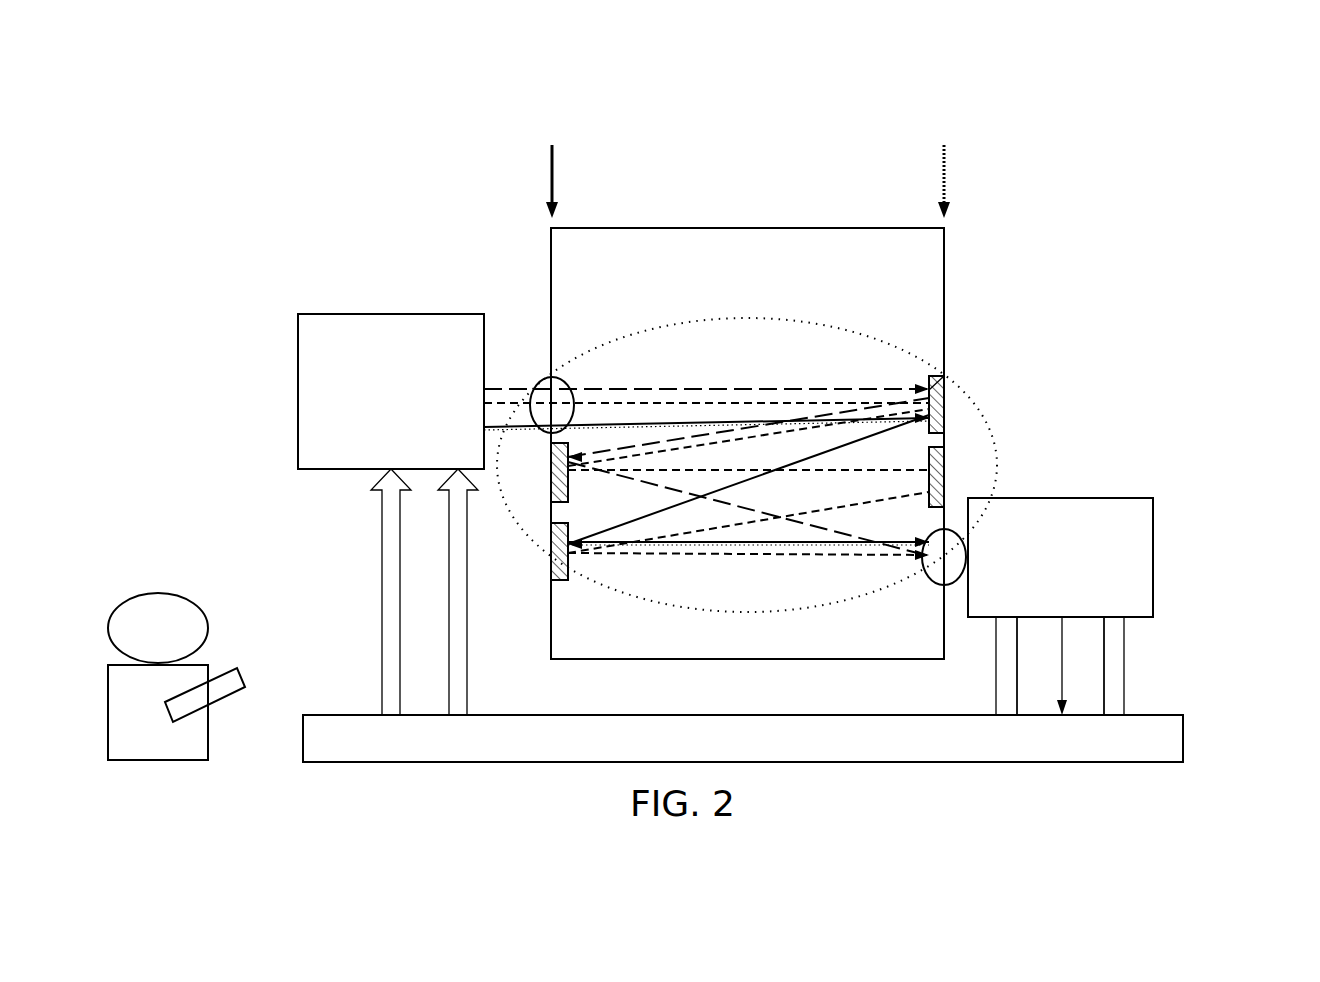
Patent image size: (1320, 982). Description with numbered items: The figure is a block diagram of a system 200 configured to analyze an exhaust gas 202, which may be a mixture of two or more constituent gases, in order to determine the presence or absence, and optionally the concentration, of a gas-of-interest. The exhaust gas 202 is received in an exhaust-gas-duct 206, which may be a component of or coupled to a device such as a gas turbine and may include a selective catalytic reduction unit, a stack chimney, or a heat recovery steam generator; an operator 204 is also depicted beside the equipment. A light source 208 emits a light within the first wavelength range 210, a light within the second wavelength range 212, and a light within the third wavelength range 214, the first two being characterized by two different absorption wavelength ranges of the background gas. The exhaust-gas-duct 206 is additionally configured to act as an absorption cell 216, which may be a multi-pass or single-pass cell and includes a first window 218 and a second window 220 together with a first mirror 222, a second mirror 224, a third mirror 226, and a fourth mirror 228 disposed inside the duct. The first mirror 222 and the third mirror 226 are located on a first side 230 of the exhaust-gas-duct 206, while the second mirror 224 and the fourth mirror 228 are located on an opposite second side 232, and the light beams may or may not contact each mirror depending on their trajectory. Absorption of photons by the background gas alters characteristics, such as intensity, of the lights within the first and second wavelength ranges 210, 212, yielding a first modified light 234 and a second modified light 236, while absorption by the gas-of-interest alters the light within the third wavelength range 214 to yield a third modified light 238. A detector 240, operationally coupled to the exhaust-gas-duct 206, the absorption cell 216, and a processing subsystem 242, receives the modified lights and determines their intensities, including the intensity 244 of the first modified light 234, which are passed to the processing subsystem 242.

The system 200 is at (524, 98).
The exhaust gas 202 is at (747, 451).
The operator 204 is at (196, 740).
The exhaust-gas-duct 206 is at (649, 228).
The light source 208 is at (383, 314).
The light within the first wavelength range 210 is at (611, 389).
The light within the second wavelength range 212 is at (653, 420).
The light within the third wavelength range 214 is at (738, 400).
The absorption cell 216 is at (950, 378).
The first window 218 is at (537, 378).
The second window 220 is at (935, 585).
The first mirror 222 is at (549, 510).
The second mirror 224 is at (946, 432).
The third mirror 226 is at (551, 586).
The fourth mirror 228 is at (946, 490).
The first side 230 is at (549, 167).
The second side 232 is at (946, 167).
The first modified light 234 is at (792, 540).
The second modified light 236 is at (853, 556).
The third modified light 238 is at (893, 546).
The detector 240 is at (1155, 545).
The processing subsystem 242 is at (1185, 740).
The intensity of the first modified light 244 is at (1062, 668).